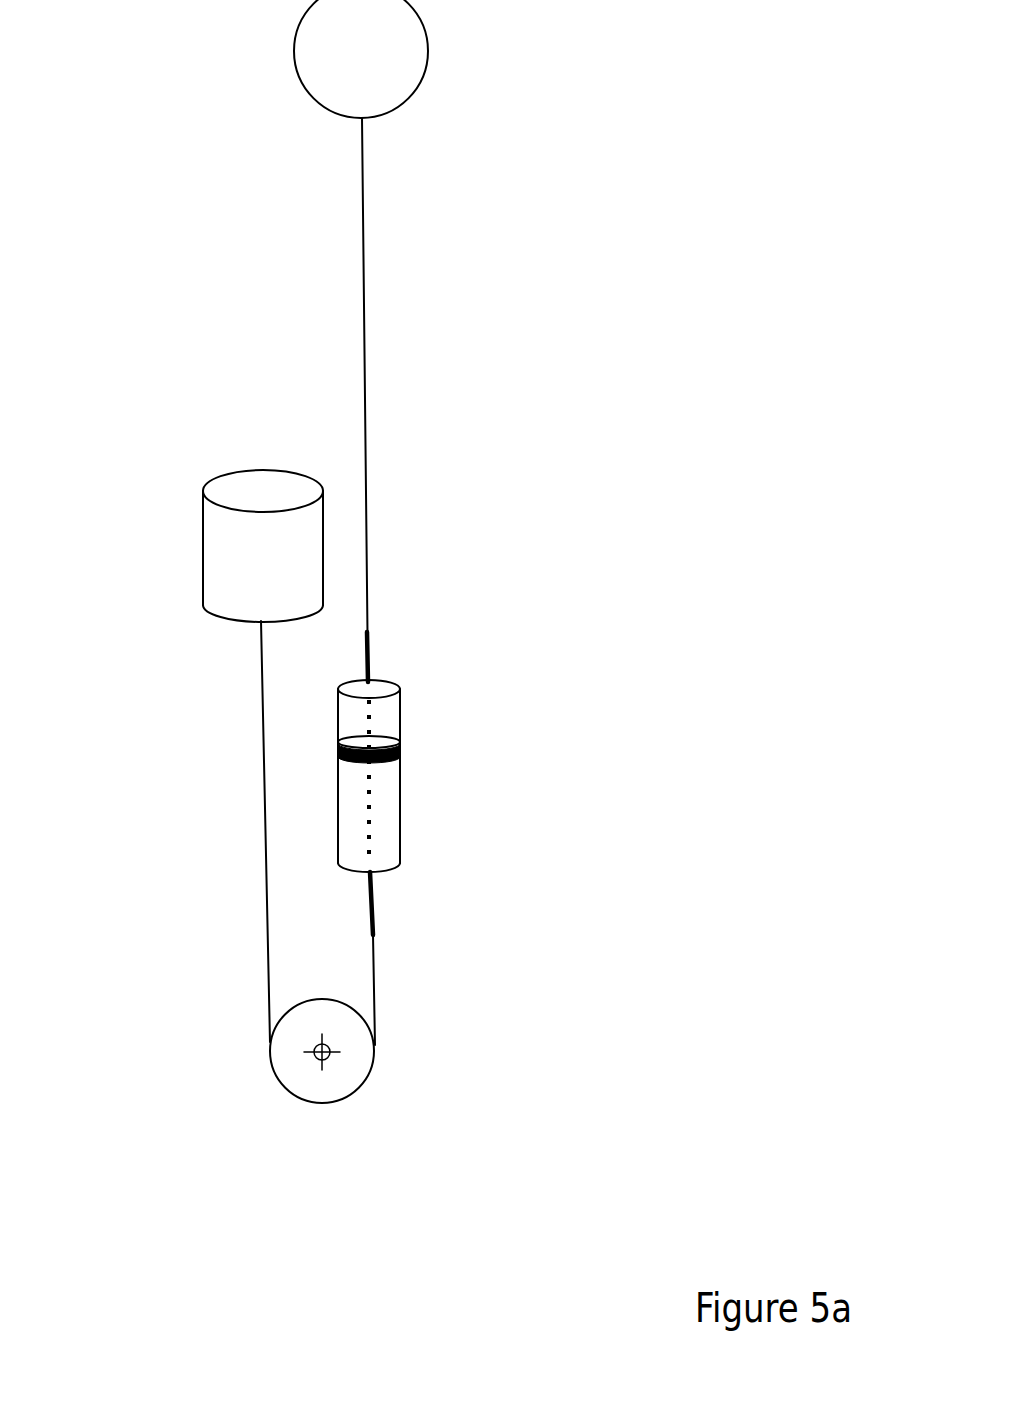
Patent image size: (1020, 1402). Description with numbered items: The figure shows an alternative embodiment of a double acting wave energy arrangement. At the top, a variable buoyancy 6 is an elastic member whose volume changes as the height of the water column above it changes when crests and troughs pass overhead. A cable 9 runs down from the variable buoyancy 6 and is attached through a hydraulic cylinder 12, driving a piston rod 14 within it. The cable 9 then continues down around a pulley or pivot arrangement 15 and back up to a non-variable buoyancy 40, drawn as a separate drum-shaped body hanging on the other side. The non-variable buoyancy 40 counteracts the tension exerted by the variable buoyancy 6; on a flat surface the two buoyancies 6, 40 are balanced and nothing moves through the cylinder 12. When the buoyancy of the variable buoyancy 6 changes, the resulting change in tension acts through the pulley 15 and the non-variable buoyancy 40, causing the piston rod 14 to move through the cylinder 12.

The variable buoyancy 6 is at (430, 57).
The cable 9 is at (368, 540).
The hydraulic cylinder 12 is at (400, 713).
The piston rod 14 is at (400, 748).
The non-variable buoyancy 40 is at (203, 562).
The pulley 15 is at (375, 1052).